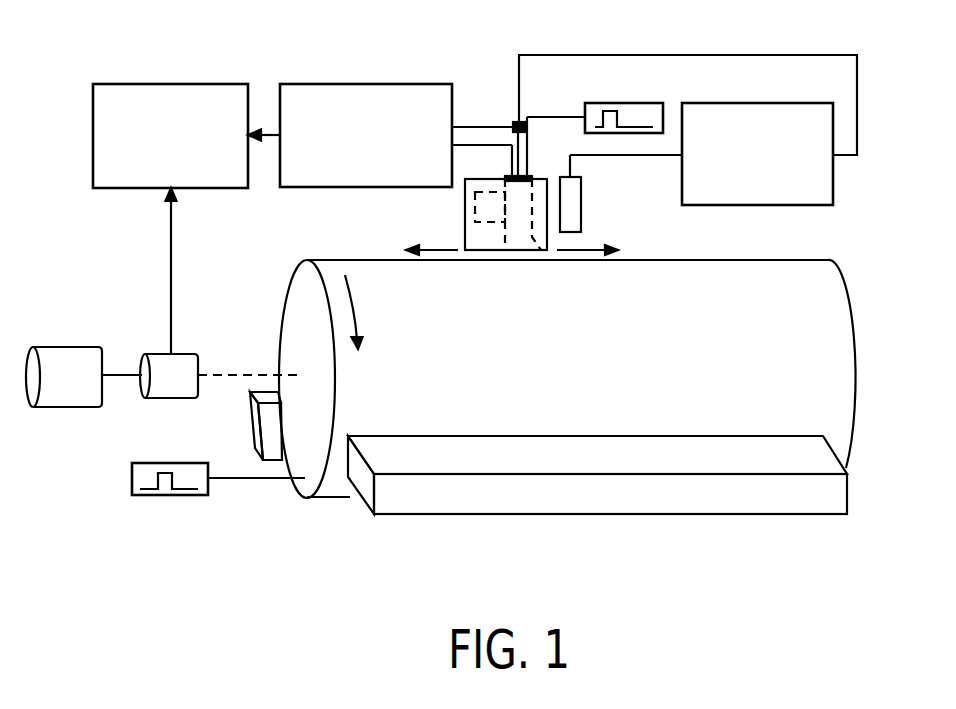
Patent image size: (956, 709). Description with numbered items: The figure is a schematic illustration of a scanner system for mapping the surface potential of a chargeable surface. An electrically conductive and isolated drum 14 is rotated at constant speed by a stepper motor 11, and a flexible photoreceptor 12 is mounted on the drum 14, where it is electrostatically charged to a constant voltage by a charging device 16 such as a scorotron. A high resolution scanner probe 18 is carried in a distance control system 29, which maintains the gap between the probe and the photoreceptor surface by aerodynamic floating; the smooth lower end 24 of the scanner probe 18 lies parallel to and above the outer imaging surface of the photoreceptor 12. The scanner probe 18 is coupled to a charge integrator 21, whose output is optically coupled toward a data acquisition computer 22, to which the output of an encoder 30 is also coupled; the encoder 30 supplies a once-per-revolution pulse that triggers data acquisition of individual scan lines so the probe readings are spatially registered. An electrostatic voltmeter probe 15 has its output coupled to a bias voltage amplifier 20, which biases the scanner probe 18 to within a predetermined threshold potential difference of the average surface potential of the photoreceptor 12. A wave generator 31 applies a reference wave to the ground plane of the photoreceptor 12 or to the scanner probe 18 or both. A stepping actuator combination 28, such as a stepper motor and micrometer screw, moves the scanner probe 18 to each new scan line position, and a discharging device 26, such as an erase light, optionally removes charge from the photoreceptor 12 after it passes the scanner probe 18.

The stepper motor 11 is at (75, 408).
The photoreceptor 12 is at (822, 258).
The drum 14 is at (296, 298).
The electrostatic voltmeter probe 15 is at (582, 197).
The charging device 16 is at (252, 427).
The scanner probe 18 is at (545, 254).
The bias voltage amplifier 20 is at (753, 103).
The charge integrator 21 is at (373, 84).
The data acquisition computer 22 is at (176, 84).
The lower end 24 is at (518, 261).
The discharging device 26 is at (803, 516).
The stepping actuator combination 28 is at (465, 208).
The distance control system 29 is at (503, 178).
The encoder 30 is at (172, 399).
The wave generator 31 is at (618, 103).